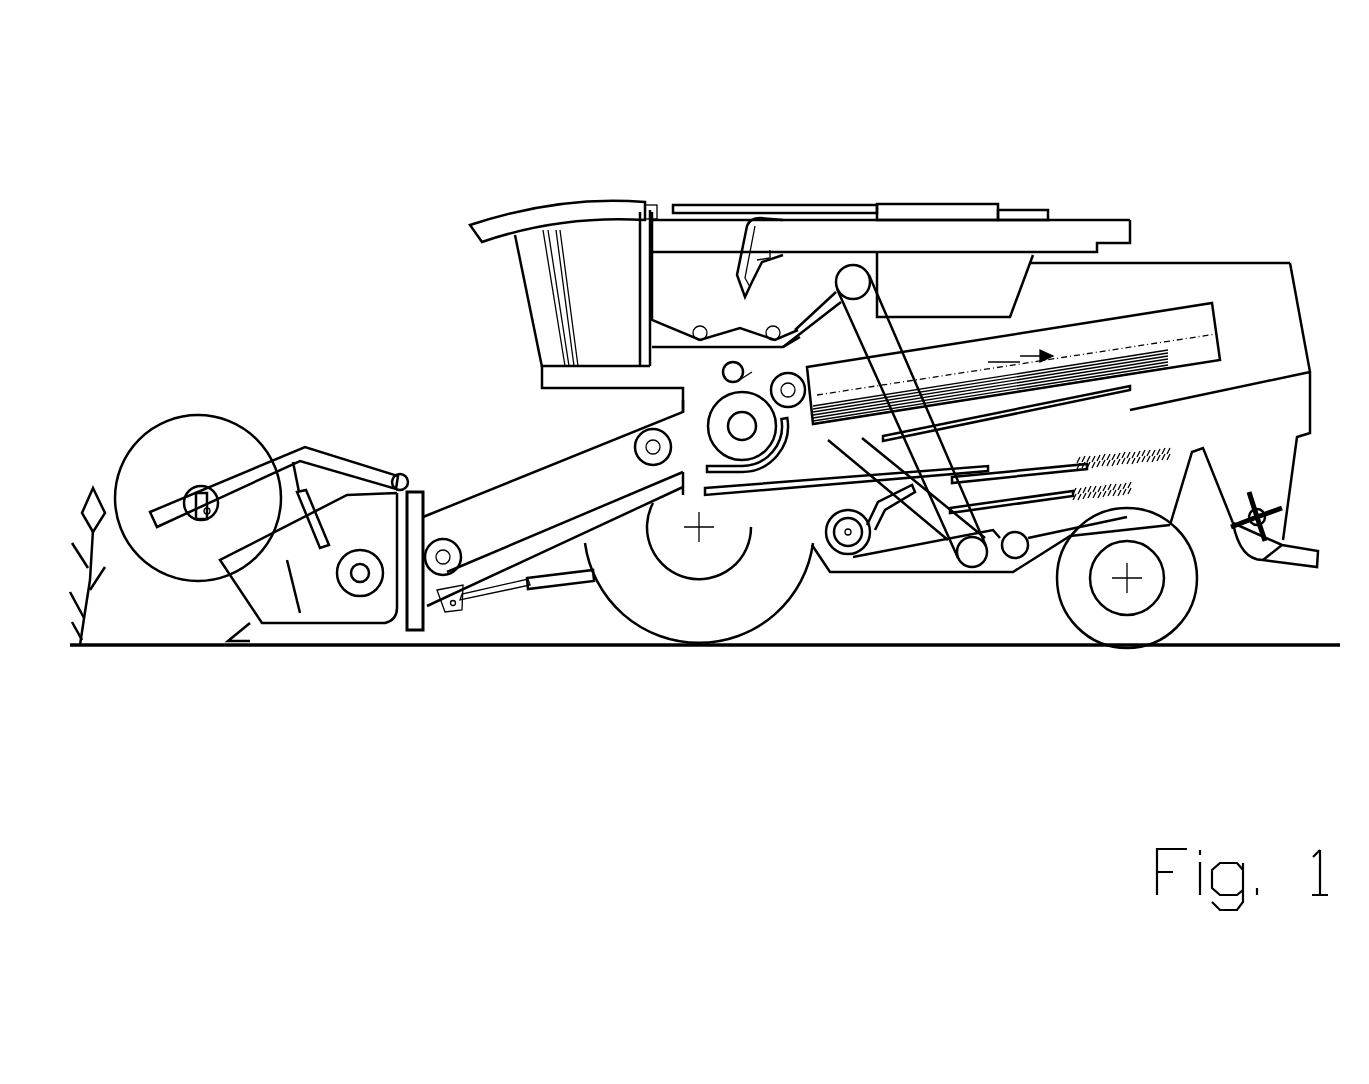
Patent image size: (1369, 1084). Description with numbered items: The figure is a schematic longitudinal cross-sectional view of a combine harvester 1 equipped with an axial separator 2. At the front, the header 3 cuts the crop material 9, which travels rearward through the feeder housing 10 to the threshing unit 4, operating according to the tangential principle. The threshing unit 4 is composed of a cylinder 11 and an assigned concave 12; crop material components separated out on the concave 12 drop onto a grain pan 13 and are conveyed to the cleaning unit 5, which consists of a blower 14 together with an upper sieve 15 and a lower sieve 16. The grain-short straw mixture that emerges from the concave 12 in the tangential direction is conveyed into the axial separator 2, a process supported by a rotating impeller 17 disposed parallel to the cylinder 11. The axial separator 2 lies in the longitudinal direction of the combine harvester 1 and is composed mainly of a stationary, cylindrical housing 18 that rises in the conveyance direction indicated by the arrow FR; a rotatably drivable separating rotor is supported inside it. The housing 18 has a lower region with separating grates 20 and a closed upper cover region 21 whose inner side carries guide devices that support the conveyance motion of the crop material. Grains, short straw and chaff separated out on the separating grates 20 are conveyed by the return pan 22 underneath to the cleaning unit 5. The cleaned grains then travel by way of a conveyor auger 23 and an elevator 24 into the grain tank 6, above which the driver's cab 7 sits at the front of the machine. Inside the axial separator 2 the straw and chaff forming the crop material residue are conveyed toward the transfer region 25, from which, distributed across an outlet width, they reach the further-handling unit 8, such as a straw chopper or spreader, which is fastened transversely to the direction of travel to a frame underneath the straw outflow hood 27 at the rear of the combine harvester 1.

The combine harvester 1 is at (705, 433).
The axial separator 2 is at (1100, 268).
The header 3 is at (362, 508).
The threshing unit 4 is at (714, 395).
The cleaning unit 5 is at (1067, 533).
The grain tank 6 is at (692, 238).
The driver's cab 7 is at (593, 248).
The further-handling unit 8 is at (1263, 583).
The crop material 9 is at (90, 642).
The feeder housing 10 is at (515, 522).
The cylinder 11 is at (720, 430).
The concave 12 is at (785, 447).
The grain pan 13 is at (780, 495).
The blower 14 is at (848, 556).
The upper sieve 15 is at (1017, 467).
The lower sieve 16 is at (1063, 483).
The beater 17 is at (788, 372).
The housing 18 is at (1043, 323).
The separating grates 20 is at (1150, 363).
The upper cover region 21 is at (1127, 327).
The return pan 22 is at (1007, 420).
The conveyor auger 23 is at (972, 567).
The elevator 24 is at (877, 330).
The transfer region 25 is at (1210, 350).
The straw outflow hood 27 is at (1297, 280).